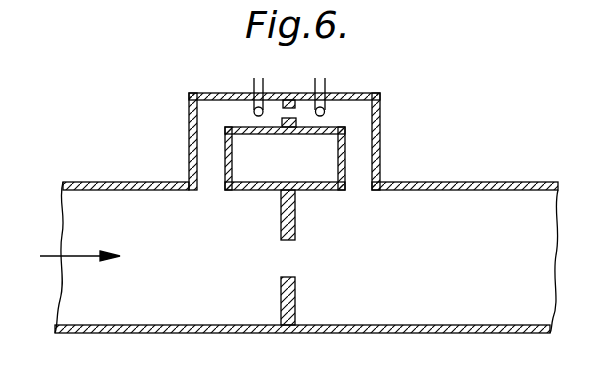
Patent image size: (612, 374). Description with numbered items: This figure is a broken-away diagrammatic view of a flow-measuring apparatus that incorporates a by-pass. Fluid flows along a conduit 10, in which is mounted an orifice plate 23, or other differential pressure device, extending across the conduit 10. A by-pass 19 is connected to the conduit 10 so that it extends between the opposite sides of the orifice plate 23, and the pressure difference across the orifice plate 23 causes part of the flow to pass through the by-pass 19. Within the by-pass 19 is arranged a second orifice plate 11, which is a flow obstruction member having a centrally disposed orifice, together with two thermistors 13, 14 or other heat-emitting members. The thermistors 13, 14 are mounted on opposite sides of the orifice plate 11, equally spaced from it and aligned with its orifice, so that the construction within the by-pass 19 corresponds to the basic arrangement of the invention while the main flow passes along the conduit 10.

The conduit 10 is at (527, 143).
The orifice plate 11 is at (296, 123).
The thermistor 13 is at (256, 112).
The thermistor 14 is at (322, 112).
The by-pass 19 is at (207, 137).
The orifice plate 23 is at (297, 229).